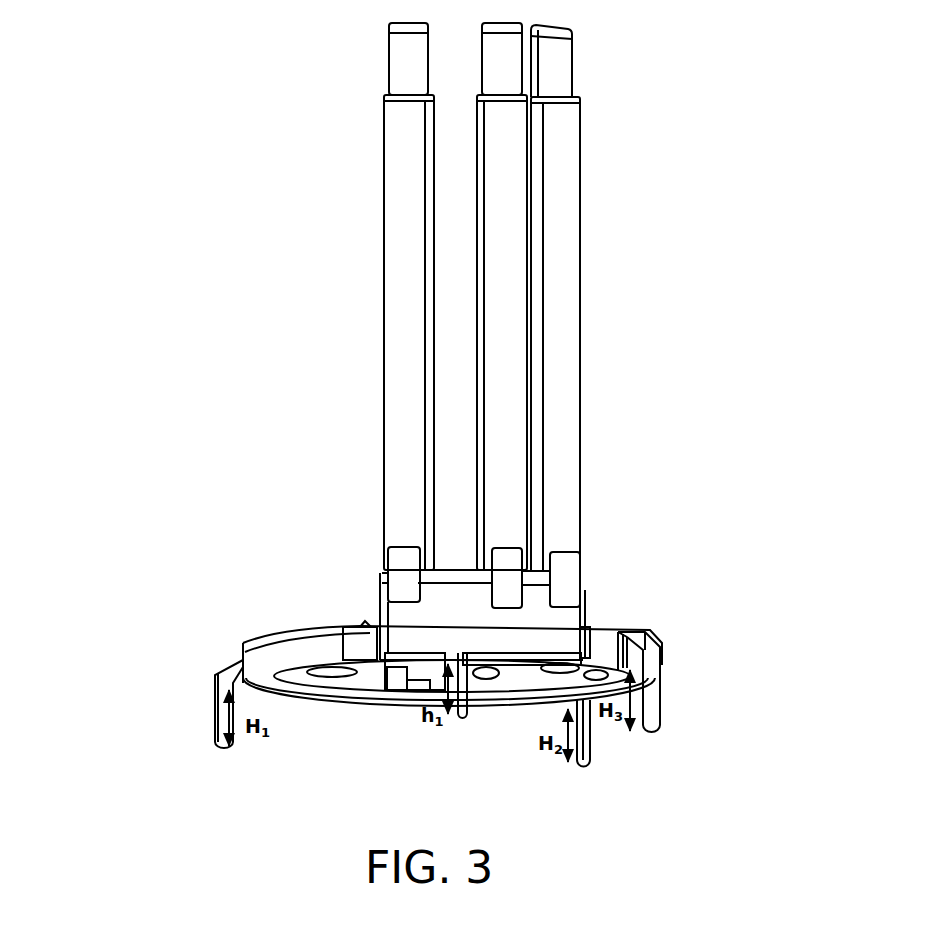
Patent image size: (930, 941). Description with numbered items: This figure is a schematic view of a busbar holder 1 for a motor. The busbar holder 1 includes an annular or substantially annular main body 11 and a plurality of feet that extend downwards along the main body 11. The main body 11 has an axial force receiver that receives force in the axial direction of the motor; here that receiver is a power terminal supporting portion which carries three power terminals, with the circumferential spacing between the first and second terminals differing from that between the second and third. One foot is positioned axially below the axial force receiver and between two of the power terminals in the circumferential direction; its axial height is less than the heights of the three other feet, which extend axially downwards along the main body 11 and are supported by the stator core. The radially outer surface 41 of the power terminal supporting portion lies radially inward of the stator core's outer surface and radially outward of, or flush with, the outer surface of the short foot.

The radially outer surface of the power terminal supporting portion 41 is at (470, 598).
The main body 11 is at (357, 636).
The busbar holder 1 is at (428, 601).